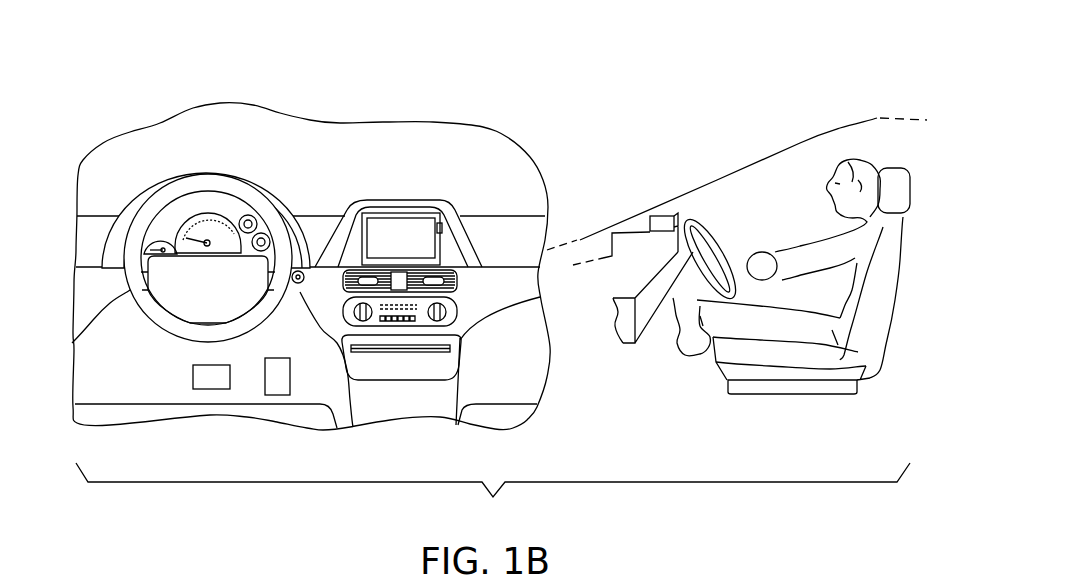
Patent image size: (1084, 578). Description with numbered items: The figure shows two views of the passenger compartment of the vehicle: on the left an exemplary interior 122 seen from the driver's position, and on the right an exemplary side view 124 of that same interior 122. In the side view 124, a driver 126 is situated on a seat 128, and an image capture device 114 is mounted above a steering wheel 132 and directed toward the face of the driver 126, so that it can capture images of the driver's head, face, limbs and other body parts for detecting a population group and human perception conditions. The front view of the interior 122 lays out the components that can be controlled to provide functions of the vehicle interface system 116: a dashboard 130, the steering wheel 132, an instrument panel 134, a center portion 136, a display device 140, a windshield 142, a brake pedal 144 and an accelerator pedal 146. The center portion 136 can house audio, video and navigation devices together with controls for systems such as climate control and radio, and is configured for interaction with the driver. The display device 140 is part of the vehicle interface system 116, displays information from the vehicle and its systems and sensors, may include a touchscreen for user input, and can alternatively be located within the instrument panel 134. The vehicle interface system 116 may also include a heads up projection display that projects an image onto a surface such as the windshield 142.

The image capture device 114 is at (668, 216).
The vehicle interface system 116 is at (443, 198).
The interior 122 is at (528, 133).
The side view 124 is at (907, 97).
The driver 126 is at (870, 163).
The seat 128 is at (890, 330).
The dashboard 130 is at (318, 226).
The steering wheel 132 is at (178, 188).
The instrument panel 134 is at (210, 222).
The center portion 136 is at (341, 290).
The display device 140 is at (397, 213).
The windshield 142 is at (287, 155).
The brake pedal 144 is at (193, 372).
The accelerator pedal 146 is at (290, 377).